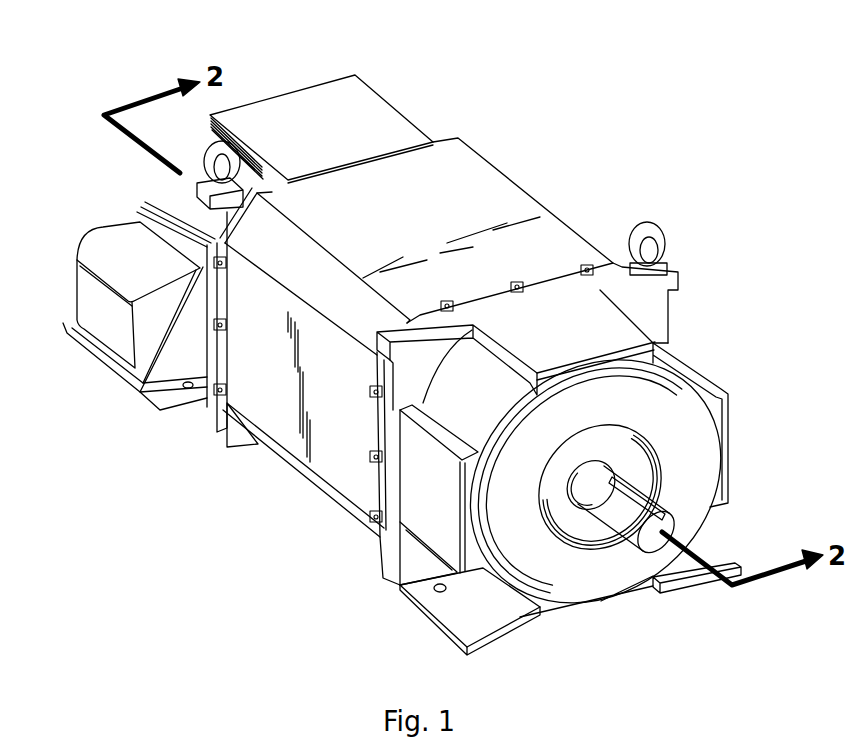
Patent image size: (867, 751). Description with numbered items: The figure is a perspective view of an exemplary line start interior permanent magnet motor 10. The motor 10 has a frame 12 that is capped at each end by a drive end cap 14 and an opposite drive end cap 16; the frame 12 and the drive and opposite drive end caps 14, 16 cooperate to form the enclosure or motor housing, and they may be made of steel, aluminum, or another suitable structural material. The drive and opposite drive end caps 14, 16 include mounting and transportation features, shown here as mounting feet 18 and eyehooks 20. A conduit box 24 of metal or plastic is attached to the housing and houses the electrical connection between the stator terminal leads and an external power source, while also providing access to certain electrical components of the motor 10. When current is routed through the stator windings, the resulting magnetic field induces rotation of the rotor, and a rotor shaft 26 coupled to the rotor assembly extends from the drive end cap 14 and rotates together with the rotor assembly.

The line start permanent magnet motor 10 is at (196, 485).
The frame 12 is at (500, 178).
The drive end cap 14 is at (627, 338).
The opposite drive end cap 16 is at (417, 124).
The mounting feet 18 is at (457, 612).
The eyehooks 20 is at (645, 225).
The conduit box 24 is at (93, 297).
The rotor shaft 26 is at (690, 505).